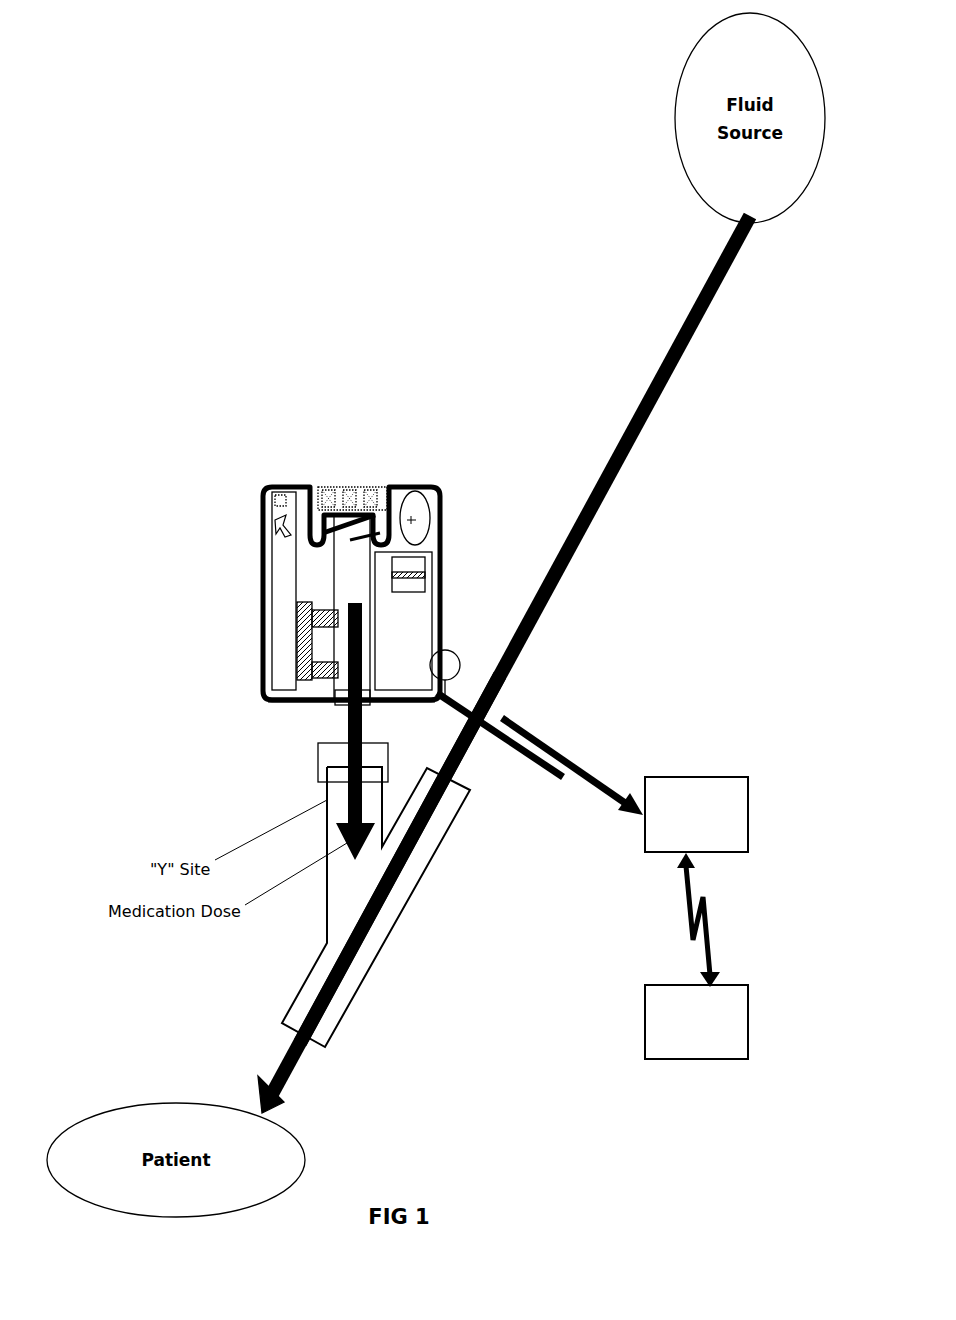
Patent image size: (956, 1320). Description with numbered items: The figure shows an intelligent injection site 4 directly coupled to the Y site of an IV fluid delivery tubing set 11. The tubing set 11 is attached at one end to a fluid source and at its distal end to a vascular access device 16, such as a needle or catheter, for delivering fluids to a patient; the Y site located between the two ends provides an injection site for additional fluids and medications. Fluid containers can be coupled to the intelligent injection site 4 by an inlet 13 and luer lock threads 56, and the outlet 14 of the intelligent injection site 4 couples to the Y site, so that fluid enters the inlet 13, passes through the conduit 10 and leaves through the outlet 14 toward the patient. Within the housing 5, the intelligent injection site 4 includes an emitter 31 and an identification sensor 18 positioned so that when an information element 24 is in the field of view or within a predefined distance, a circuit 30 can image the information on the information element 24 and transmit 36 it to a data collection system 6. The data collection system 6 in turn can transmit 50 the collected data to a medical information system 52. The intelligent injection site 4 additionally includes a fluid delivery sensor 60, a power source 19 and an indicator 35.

The intelligent injection site 4 is at (267, 695).
The medication delivery device housing 5 is at (267, 653).
The data collection system 6 is at (642, 855).
The conduit 10 is at (352, 579).
The IV fluid delivery tubing set 11 is at (621, 475).
The inlet 13 is at (363, 493).
The outlet 14 is at (365, 785).
The vascular access device 16 is at (280, 1097).
The identification sensor 18 is at (272, 527).
The power source 19 is at (423, 490).
The information element 24 is at (315, 495).
The circuit 30 is at (282, 560).
The emitter 31 is at (270, 495).
The indicator 35 is at (455, 655).
The transmission 36 is at (565, 757).
The transmission 50 is at (712, 937).
The medical information system 52 is at (645, 1060).
The luer lock threads 56 is at (395, 535).
The fluid delivery sensor 60 is at (307, 627).